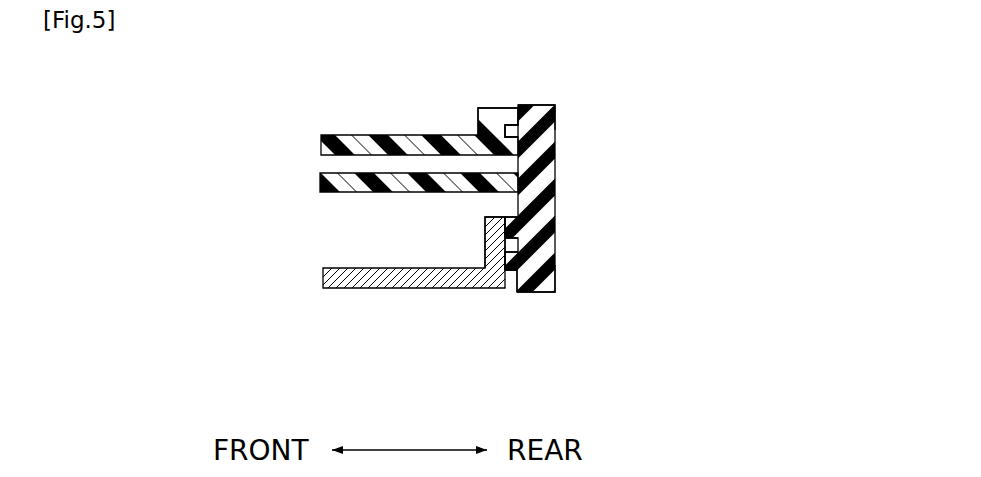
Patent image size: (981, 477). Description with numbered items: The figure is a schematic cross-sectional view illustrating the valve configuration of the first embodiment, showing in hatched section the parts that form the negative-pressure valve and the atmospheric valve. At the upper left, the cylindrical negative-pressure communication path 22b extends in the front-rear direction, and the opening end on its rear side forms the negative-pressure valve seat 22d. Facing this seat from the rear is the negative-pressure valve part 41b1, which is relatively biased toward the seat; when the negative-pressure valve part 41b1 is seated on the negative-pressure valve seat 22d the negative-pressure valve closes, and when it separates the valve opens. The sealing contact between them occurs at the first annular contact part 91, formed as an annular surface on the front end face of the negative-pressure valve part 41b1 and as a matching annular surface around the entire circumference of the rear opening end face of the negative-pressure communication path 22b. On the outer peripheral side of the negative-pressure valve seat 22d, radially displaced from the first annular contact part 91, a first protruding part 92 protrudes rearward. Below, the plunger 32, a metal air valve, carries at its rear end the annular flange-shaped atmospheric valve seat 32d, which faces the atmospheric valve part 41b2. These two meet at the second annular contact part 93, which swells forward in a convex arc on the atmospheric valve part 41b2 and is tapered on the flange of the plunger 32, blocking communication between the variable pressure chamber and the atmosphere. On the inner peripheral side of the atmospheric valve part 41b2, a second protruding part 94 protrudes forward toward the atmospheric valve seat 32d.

The negative-pressure communication path 22b is at (362, 134).
The negative-pressure valve seat 22d is at (476, 137).
The first protruding parts 92 is at (510, 123).
The negative-pressure valve part 41b1 is at (547, 123).
The first annular contact part 91 is at (531, 150).
The second annular contact part 93 is at (512, 231).
The second protruding parts 94 is at (512, 273).
The atmospheric valve part 41b2 is at (556, 282).
The atmospheric valve seat 32d is at (485, 242).
The plunger 32 is at (333, 288).